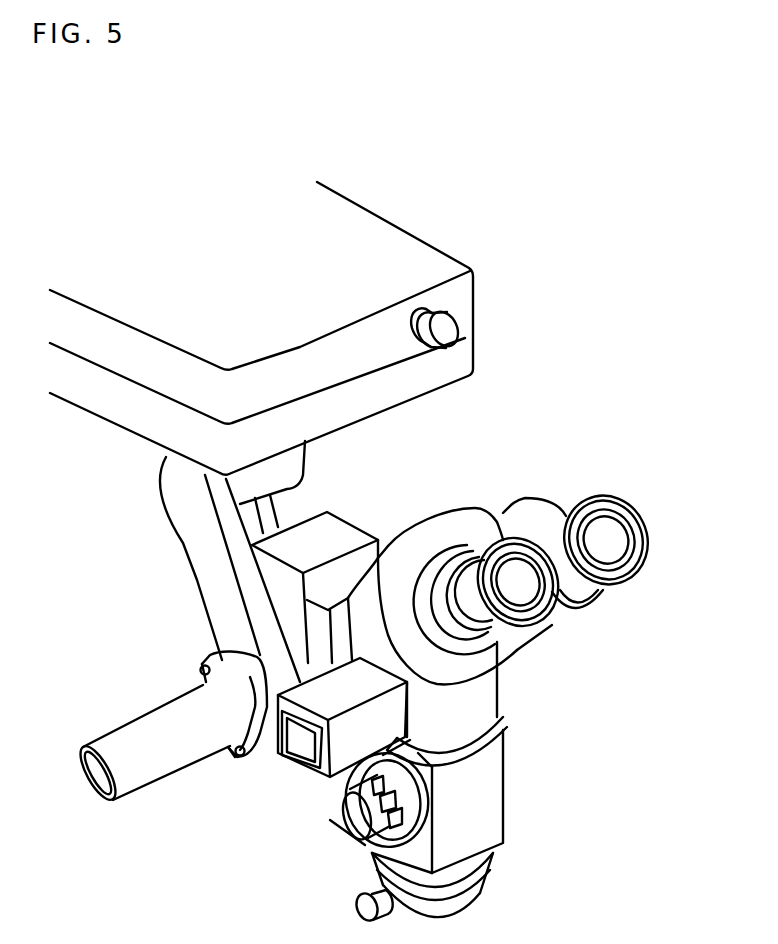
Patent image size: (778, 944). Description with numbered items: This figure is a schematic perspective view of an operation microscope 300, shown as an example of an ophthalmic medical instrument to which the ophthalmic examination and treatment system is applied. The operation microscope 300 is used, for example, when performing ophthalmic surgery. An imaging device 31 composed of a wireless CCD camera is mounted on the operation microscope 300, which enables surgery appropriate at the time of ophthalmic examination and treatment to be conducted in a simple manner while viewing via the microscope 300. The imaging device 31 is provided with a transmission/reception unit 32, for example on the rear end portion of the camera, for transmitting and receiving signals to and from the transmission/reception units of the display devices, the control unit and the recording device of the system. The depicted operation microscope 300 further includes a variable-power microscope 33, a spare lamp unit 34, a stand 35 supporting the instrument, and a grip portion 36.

The operation microscope 300 is at (482, 448).
The imaging device 31 is at (355, 740).
The transmission/reception unit 32 is at (300, 747).
The variable-power microscope 33 is at (610, 495).
The spare lamp unit 34 is at (373, 248).
The stand 35 is at (205, 562).
The grip portion 36 is at (158, 763).